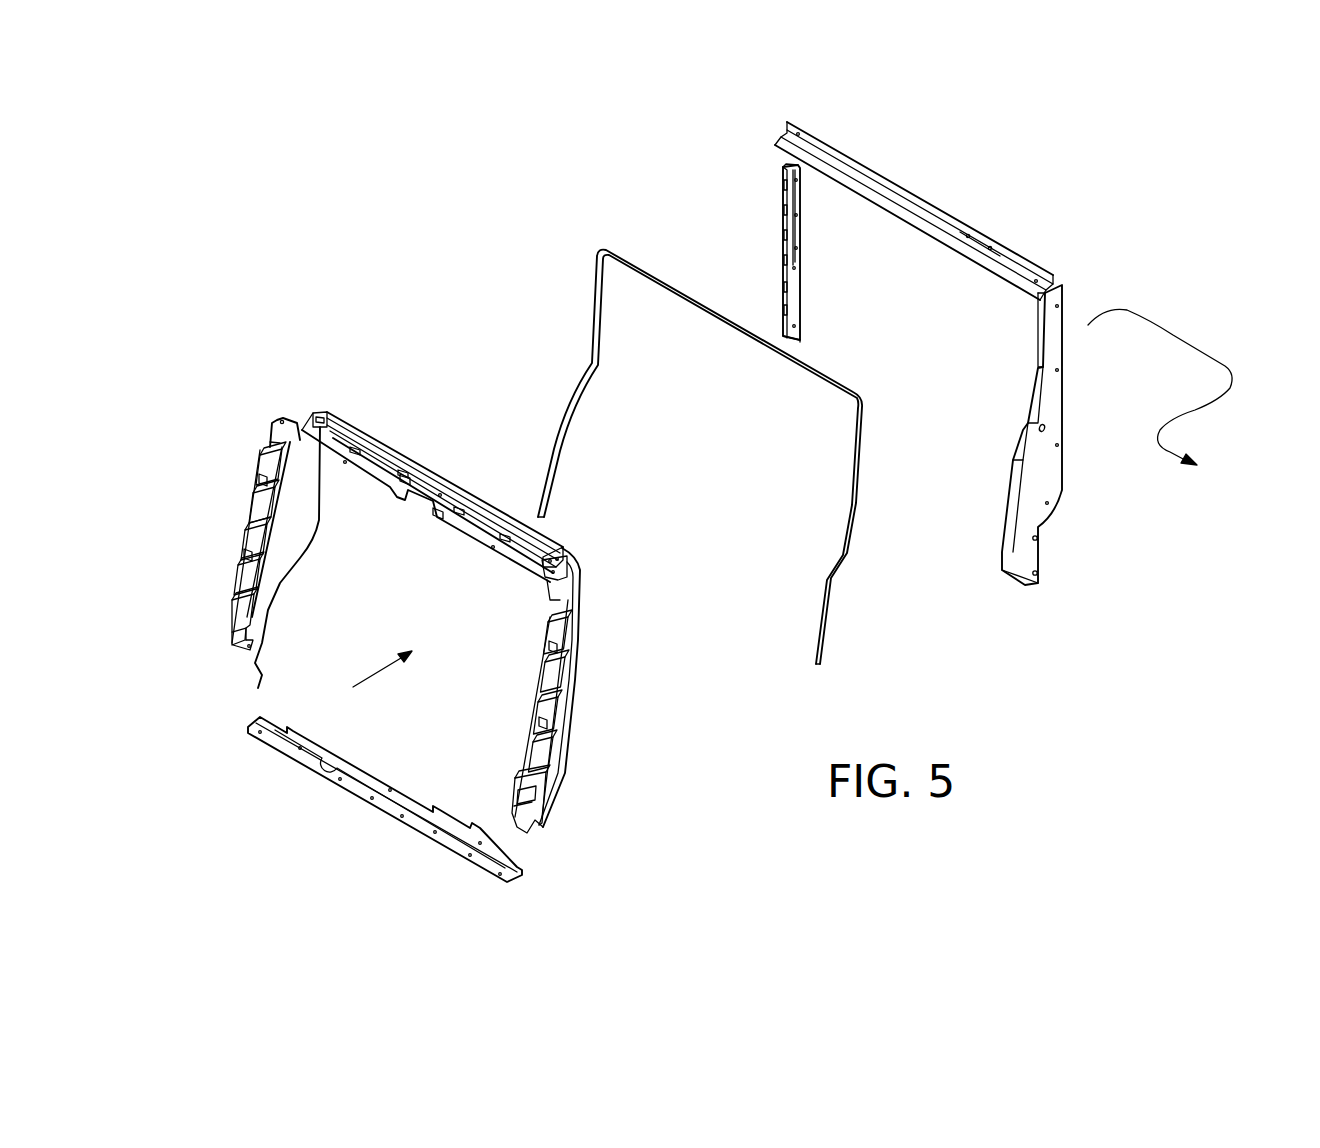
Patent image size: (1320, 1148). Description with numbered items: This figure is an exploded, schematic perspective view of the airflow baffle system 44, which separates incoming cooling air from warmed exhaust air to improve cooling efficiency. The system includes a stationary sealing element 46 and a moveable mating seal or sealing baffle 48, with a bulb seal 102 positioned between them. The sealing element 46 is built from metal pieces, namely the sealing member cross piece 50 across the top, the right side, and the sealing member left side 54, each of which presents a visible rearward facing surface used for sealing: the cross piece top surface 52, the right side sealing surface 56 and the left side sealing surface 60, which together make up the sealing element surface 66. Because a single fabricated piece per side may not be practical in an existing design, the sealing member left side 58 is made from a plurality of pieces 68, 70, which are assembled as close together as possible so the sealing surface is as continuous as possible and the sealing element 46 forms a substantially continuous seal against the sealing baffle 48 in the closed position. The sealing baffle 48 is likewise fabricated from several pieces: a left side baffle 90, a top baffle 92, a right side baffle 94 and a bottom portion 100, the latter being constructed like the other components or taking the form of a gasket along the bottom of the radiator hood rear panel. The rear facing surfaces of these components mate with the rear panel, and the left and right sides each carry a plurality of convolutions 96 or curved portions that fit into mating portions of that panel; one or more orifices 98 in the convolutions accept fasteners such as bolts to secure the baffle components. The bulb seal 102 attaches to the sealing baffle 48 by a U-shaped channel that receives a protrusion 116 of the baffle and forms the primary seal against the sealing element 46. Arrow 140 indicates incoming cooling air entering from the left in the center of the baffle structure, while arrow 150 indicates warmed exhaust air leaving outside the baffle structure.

The airflow baffle system 44 is at (422, 330).
The sealing element 46 is at (1069, 276).
The sealing baffle 48 is at (204, 485).
The sealing member cross piece 50 is at (922, 200).
The cross piece top surface 52 is at (972, 242).
The sealing member left side 54 is at (1040, 485).
The right side sealing surface 56 is at (1037, 392).
The sealing member left side 58 is at (797, 242).
The left side sealing surface 60 is at (783, 253).
The sealing element surface 66 is at (747, 170).
The piece of sealing member left side 68 is at (800, 202).
The piece of sealing member left side 70 is at (800, 312).
The left side baffle 90 is at (233, 660).
The top baffle 92 is at (503, 512).
The right side baffle 94 is at (530, 820).
The convolutions 96 is at (240, 590).
The orifices 98 is at (350, 448).
The bottom portion 100 is at (392, 810).
The bulb seal 102 is at (856, 396).
The protrusion 116 is at (592, 632).
The arrow 140 is at (392, 672).
The arrow 150 is at (1178, 330).